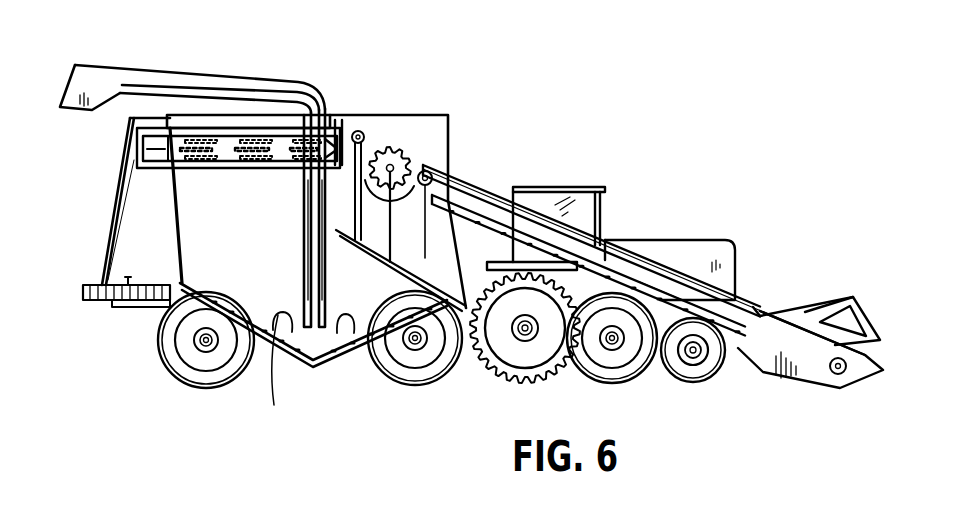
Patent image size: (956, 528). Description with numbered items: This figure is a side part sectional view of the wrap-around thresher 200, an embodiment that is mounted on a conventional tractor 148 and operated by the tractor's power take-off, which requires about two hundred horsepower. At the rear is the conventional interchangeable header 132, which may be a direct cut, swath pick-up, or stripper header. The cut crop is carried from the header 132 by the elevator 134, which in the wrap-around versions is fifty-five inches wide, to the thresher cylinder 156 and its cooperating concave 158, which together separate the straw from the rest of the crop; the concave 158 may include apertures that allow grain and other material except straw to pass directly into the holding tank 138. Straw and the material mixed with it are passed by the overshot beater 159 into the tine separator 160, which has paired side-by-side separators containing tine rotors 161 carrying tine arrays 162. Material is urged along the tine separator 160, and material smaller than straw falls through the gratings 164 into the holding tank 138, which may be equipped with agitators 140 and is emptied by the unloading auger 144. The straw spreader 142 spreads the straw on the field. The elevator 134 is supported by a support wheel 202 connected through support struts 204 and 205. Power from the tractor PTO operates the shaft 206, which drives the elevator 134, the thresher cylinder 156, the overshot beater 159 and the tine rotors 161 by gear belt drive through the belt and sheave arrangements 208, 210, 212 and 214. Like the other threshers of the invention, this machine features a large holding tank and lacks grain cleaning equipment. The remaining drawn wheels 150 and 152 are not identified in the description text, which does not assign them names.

The header 132 is at (805, 311).
The elevator 134 is at (742, 297).
The holding tank 138 is at (190, 240).
The agitators 140 is at (330, 363).
The straw spreader 142 is at (97, 298).
The unloading auger 144 is at (130, 76).
The tractor 148 is at (680, 240).
The second wheel 150 is at (392, 363).
The front wheel 152 is at (167, 353).
The thresher cylinder 156 is at (390, 147).
The concave 158 is at (430, 248).
The overshot beater 159 is at (358, 131).
The tine separator 160 is at (330, 100).
The tine rotors 161 is at (175, 168).
The tine arrays 162 is at (283, 147).
The gratings 164 is at (197, 163).
The wrap-around thresher 200 is at (478, 118).
The support wheel 202 is at (632, 360).
The support strut 204 is at (625, 242).
The support strut 205 is at (655, 313).
The shaft 206 is at (458, 330).
The belt and sheave arrangement 208 is at (515, 200).
The belt and sheave arrangement 210 is at (360, 258).
The belt and sheave arrangement 212 is at (360, 230).
The belt and sheave arrangement 214 is at (305, 200).